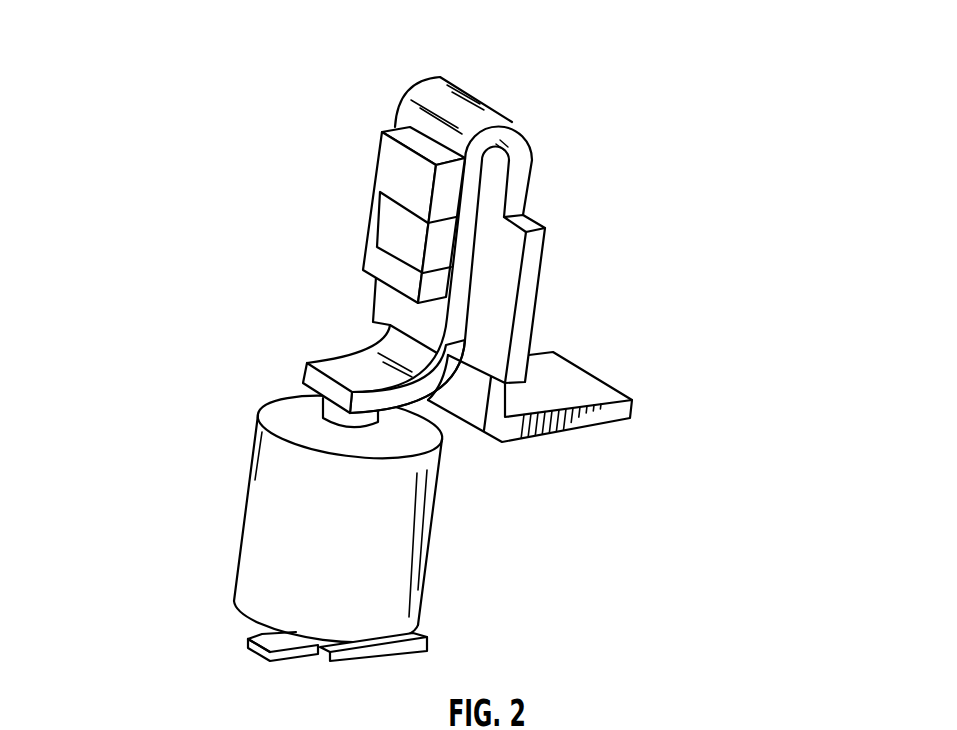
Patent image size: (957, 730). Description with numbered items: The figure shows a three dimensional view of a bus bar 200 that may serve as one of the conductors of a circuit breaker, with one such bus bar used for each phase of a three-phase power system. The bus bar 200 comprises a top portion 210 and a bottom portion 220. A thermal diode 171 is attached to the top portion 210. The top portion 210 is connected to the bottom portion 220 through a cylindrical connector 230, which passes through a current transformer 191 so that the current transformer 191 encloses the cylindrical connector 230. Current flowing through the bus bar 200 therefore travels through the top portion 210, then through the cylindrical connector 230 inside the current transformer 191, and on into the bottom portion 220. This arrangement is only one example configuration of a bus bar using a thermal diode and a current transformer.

The bus bar 200 is at (700, 158).
The top portion 210 is at (497, 95).
The bottom portion 220 is at (446, 634).
The thermal diode 171 is at (375, 182).
The current transformer 191 is at (243, 523).
The cylindrical connector 230 is at (322, 401).